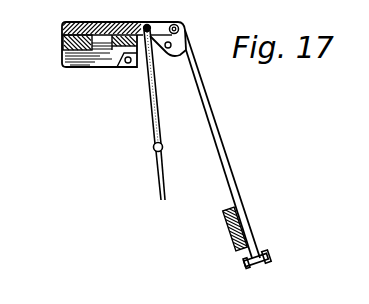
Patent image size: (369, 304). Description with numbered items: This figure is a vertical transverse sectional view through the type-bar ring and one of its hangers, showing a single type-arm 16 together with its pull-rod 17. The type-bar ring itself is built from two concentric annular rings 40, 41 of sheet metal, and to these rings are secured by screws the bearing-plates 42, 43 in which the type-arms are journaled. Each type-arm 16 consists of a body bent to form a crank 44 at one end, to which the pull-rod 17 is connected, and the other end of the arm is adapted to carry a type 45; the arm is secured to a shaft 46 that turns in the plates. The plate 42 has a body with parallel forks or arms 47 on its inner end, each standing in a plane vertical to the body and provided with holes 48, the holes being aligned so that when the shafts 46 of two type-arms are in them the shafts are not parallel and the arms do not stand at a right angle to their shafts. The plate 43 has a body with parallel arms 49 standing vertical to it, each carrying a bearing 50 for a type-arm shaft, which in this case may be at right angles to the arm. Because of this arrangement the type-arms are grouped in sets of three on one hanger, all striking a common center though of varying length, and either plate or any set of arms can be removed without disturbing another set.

The type-arm 16 is at (222, 144).
The pull-rod 17 is at (156, 123).
The annular ring 40 is at (86, 44).
The annular ring 41 is at (120, 44).
The bearing-plate 42 is at (102, 17).
The bearing-plate 43 is at (66, 64).
The crank 44 is at (168, 22).
The type 45 is at (262, 255).
The shaft 46 is at (179, 28).
The forks or arms 47 is at (184, 50).
The holes 48 is at (171, 57).
The parallel arms 49 is at (91, 68).
The bearing 50 is at (128, 63).